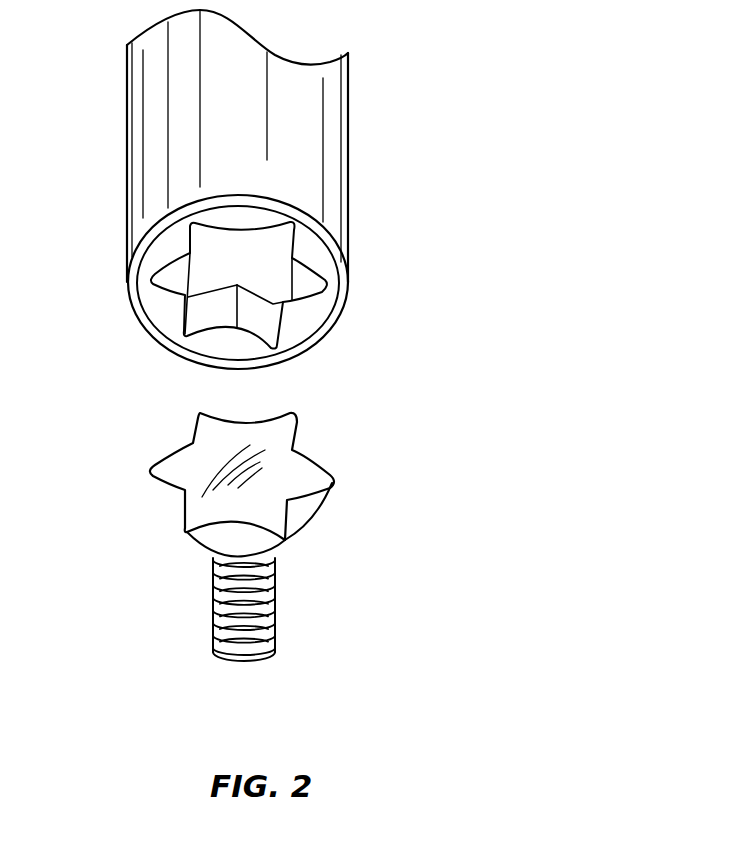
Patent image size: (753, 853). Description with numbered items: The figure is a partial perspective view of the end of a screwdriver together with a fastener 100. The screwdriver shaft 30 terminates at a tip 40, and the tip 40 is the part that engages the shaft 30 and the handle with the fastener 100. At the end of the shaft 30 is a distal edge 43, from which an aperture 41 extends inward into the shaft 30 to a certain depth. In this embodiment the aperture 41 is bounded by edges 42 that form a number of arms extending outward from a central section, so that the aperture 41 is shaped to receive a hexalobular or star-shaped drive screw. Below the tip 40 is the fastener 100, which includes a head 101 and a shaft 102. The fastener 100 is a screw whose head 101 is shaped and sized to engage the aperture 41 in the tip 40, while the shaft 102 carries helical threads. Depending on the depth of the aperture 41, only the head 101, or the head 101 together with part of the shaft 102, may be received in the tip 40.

The shaft 30 is at (300, 115).
The tip 40 is at (240, 305).
The aperture 41 is at (210, 310).
The edges 42 is at (165, 290).
The distal edge 43 is at (322, 257).
The fastener 100 is at (310, 538).
The head 101 is at (290, 472).
The shaft 102 is at (260, 625).